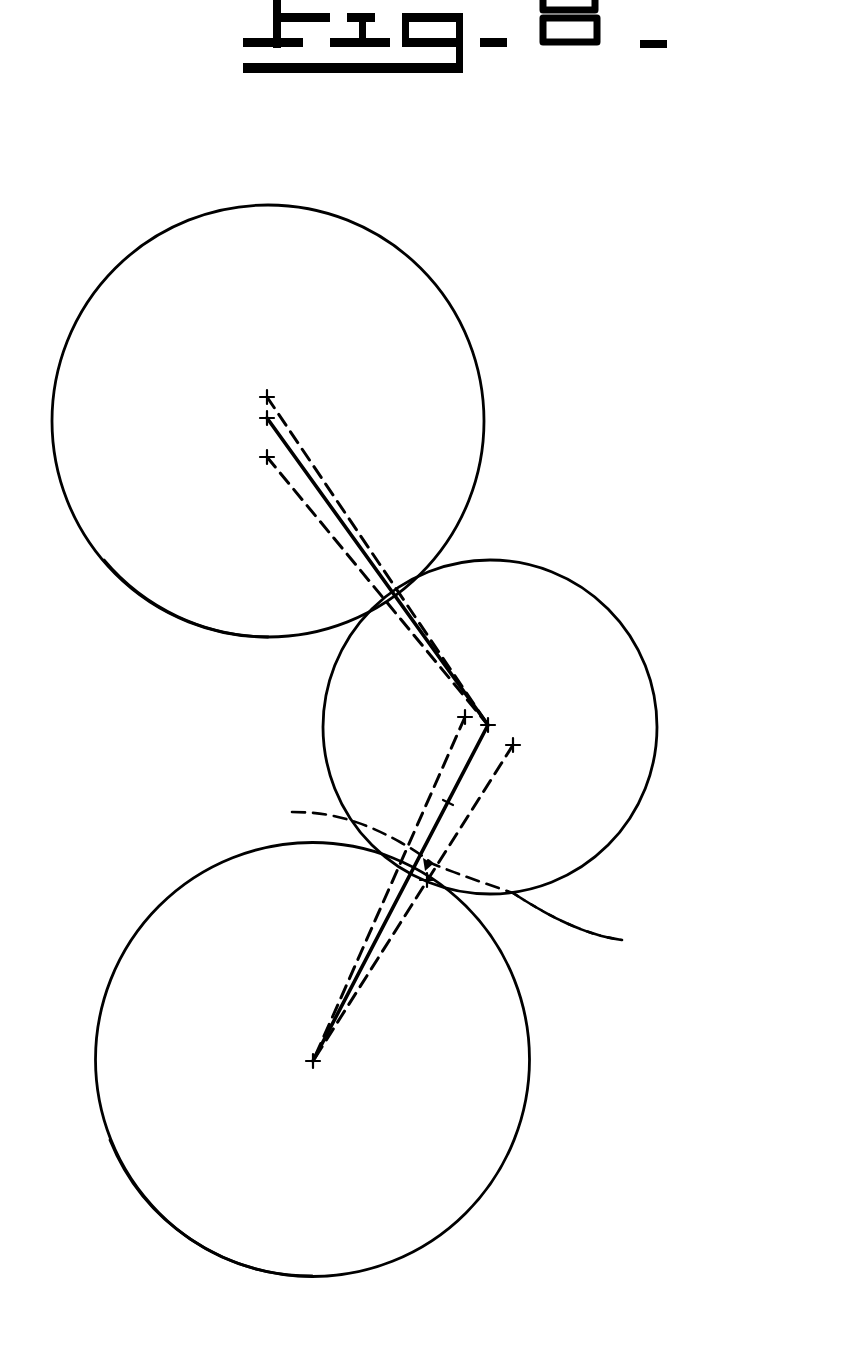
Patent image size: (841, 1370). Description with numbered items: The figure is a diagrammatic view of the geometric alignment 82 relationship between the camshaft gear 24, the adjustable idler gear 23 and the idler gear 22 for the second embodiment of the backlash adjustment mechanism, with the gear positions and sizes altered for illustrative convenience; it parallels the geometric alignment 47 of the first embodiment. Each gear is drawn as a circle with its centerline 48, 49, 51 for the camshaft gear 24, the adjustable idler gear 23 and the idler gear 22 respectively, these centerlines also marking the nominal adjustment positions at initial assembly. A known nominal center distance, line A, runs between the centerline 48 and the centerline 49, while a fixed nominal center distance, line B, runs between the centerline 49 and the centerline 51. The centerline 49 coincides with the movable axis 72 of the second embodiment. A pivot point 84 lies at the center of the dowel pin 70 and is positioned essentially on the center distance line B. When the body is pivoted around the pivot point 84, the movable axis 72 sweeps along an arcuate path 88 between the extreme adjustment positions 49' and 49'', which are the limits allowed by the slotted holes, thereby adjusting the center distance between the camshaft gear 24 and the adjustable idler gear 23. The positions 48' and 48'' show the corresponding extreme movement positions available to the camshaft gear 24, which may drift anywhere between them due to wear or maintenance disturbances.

The idler gear 22 is at (442, 1235).
The adjustable idler gear 23 is at (623, 623).
The camshaft gear 24 is at (468, 340).
The geometric alignment 47 is at (128, 587).
The centerline 48 is at (374, 560).
The extreme movement position 48' is at (371, 539).
The extreme movement position 48'' is at (342, 587).
The centerline 49 is at (464, 858).
The adjustment position 49' is at (392, 860).
The adjustment position 49'' is at (476, 896).
The centerline 51 is at (317, 1065).
The dowel pin 70 is at (435, 867).
The movable axis 72 is at (488, 723).
The geometric alignment 82 is at (140, 1193).
The pivot point 84 is at (597, 926).
The arcuate path 88 is at (505, 733).
The center distance line A is at (303, 467).
The center distance line B is at (390, 917).